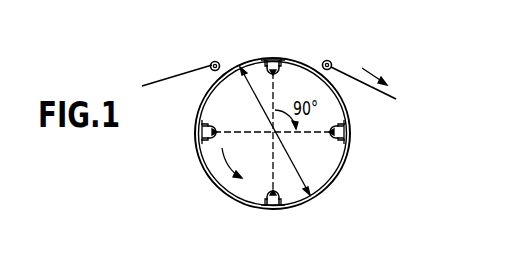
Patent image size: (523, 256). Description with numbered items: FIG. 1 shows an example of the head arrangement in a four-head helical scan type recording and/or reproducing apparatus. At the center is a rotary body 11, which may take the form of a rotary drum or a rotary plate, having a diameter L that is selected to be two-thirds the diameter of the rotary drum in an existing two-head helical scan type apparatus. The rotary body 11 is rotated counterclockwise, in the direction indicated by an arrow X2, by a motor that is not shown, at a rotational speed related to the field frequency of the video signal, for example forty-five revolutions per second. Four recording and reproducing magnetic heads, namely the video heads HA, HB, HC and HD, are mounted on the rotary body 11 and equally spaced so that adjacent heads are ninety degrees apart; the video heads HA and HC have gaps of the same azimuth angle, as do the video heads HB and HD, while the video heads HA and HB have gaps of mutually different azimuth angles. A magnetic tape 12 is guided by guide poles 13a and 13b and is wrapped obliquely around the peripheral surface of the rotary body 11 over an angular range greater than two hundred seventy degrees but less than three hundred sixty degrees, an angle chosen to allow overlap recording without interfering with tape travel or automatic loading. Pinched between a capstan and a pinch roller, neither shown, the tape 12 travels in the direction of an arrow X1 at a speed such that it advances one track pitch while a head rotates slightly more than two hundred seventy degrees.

The rotary body 11 is at (299, 67).
The magnetic tape 12 is at (172, 72).
The guide pole 13a is at (214, 60).
The guide pole 13b is at (331, 62).
The video head HA is at (272, 58).
The video head HB is at (200, 137).
The video head HC is at (285, 197).
The video head HD is at (344, 140).
The diameter L is at (287, 148).
The arrow X1 is at (370, 80).
The arrow X2 is at (242, 163).